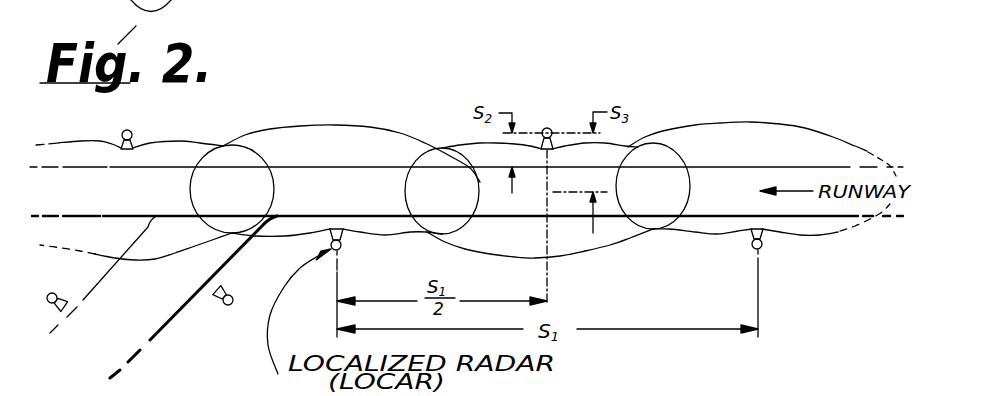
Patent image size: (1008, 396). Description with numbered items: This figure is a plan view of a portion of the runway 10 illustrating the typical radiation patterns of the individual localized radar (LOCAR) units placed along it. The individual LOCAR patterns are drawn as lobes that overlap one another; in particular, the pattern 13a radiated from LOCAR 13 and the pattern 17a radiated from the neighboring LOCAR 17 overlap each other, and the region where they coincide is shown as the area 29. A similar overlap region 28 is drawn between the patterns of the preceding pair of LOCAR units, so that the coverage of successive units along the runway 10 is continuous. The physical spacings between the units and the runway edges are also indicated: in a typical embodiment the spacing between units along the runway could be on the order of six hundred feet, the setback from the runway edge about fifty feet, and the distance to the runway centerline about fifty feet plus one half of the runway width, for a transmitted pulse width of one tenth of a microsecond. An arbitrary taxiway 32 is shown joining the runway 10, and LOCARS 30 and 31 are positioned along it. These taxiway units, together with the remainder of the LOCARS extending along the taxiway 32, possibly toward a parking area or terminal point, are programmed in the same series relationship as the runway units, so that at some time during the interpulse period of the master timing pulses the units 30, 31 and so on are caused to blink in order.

The runway 10 is at (822, 208).
The LOCAR 13 is at (546, 127).
The pattern 13a is at (600, 253).
The LOCAR 17 is at (760, 249).
The pattern 17a is at (677, 133).
The overlap region of adjacent coverage patterns 28 is at (436, 186).
The area 29 is at (672, 203).
The LOCAR 30 is at (230, 296).
The LOCAR 31 is at (79, 273).
The taxiway 32 is at (146, 325).